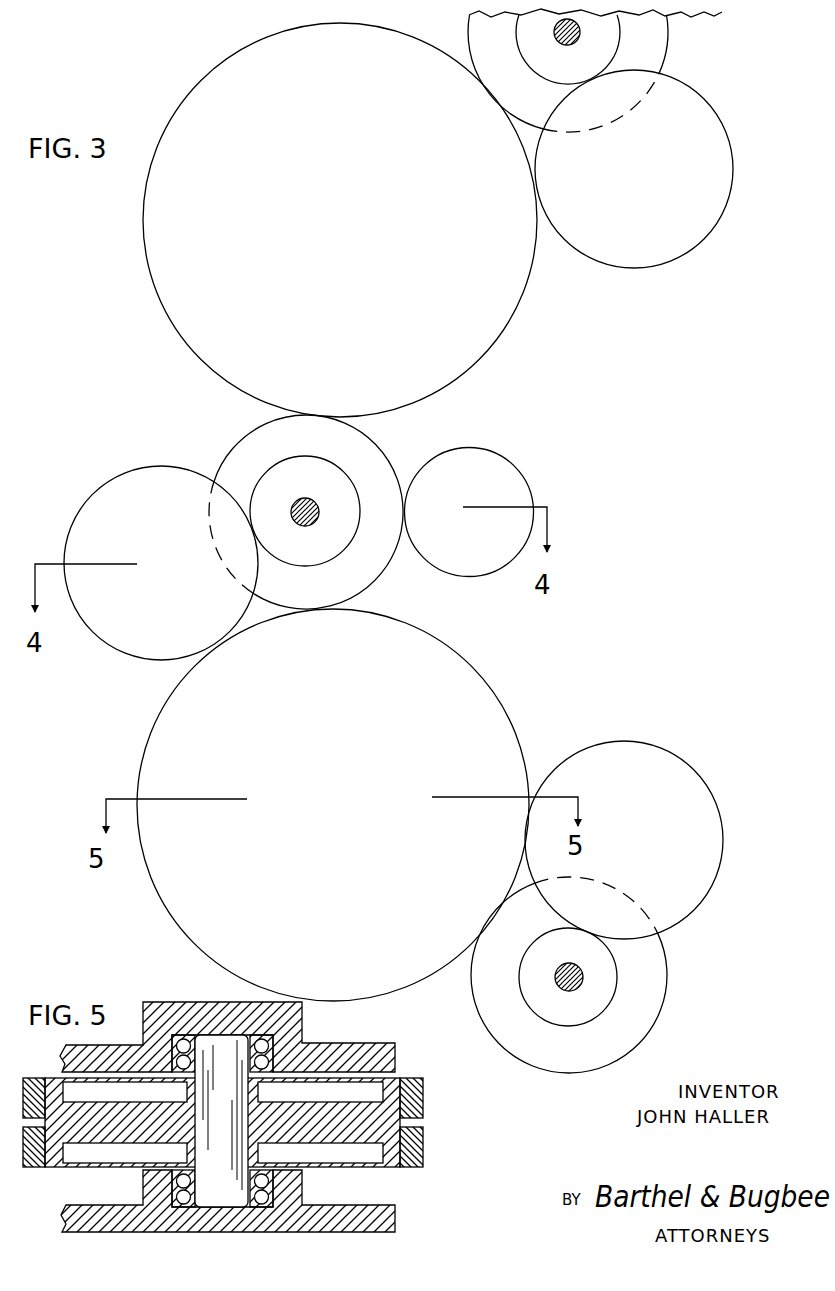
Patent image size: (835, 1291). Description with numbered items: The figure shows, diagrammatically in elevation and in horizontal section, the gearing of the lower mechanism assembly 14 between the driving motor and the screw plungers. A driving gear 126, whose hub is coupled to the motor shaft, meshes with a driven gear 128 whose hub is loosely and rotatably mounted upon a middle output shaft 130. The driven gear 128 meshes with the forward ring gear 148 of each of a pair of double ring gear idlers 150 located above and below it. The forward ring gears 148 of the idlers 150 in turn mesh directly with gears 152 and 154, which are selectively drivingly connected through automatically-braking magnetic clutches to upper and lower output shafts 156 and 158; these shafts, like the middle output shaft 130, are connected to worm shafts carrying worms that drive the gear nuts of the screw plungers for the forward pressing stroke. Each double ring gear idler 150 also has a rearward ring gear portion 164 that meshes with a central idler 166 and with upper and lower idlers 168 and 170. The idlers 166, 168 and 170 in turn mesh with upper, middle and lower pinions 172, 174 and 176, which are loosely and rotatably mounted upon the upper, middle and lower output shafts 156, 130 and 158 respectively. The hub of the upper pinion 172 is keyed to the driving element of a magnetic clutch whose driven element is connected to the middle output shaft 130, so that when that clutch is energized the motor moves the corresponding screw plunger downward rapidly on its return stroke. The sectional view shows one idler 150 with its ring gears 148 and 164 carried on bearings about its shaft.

In FIG. 3, the lower mechanism assembly 14 is at (580, 514).
In FIG. 3, the driving gear 126 is at (503, 468).
In FIG. 3, the driven gear 128 is at (368, 462).
In FIG. 3, the middle output shaft 130 is at (295, 500).
In FIG. 5, the forward ring gear 148 is at (425, 1150).
In FIG. 3, the double ring gear idler 150 is at (487, 323).
In FIG. 5, the double ring gear idler 150 is at (340, 1135).
In FIG. 3, the gear 152 is at (655, 49).
In FIG. 3, the gear 154 is at (658, 990).
In FIG. 3, the upper output shaft 156 is at (580, 30).
In FIG. 3, the lower output shaft 158 is at (583, 975).
In FIG. 5, the rearward ring gear portion 164 is at (412, 1100).
In FIG. 3, the central idler 166 is at (120, 490).
In FIG. 3, the upper idler 168 is at (708, 208).
In FIG. 3, the lower idler 170 is at (708, 808).
In FIG. 3, the upper pinion 172 is at (317, 462).
In FIG. 3, the middle pinion 174 is at (566, 72).
In FIG. 3, the lower pinion 176 is at (583, 1007).